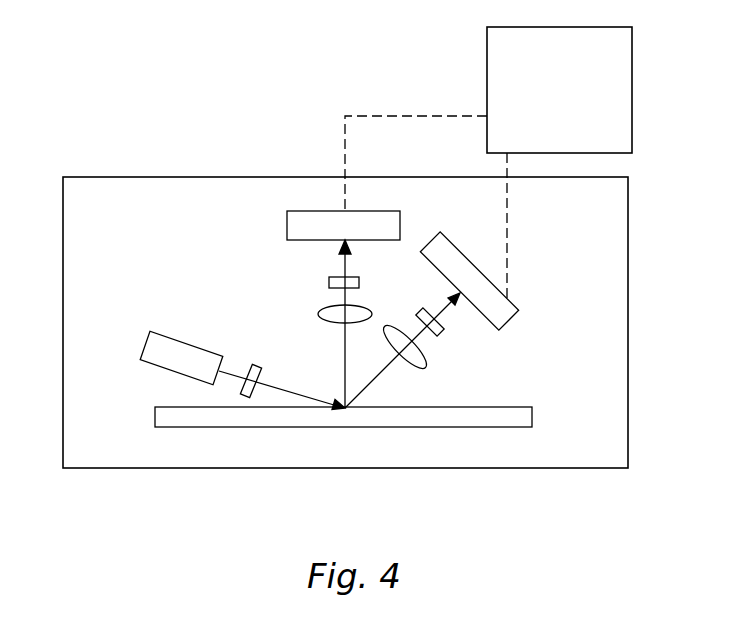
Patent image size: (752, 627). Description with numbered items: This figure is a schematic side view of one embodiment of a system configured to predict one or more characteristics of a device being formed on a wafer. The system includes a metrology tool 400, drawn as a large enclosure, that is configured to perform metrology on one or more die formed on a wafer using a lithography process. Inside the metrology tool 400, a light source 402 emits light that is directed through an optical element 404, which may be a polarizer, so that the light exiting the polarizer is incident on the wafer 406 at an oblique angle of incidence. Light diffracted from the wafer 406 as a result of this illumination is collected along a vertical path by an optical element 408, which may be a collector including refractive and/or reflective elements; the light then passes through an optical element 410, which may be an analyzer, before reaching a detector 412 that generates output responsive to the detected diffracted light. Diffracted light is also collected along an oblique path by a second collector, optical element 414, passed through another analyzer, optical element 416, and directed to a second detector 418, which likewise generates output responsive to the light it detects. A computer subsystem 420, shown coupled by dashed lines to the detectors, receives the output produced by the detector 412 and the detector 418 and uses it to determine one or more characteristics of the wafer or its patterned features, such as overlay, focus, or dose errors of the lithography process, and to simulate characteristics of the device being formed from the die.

The metrology tool 400 is at (628, 293).
The light source 402 is at (177, 342).
The optical element 404 is at (257, 366).
The wafer 406 is at (167, 407).
The optical element 408 is at (318, 310).
The optical element 410 is at (329, 280).
The detector 412 is at (287, 228).
The optical element 414 is at (427, 367).
The optical element 416 is at (442, 333).
The detector 418 is at (512, 318).
The computer subsystem 420 is at (540, 131).